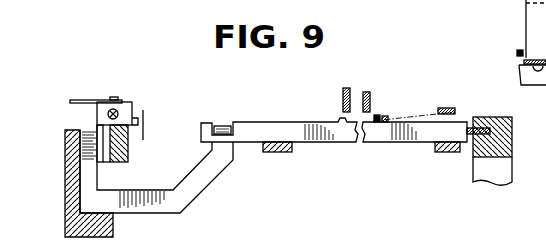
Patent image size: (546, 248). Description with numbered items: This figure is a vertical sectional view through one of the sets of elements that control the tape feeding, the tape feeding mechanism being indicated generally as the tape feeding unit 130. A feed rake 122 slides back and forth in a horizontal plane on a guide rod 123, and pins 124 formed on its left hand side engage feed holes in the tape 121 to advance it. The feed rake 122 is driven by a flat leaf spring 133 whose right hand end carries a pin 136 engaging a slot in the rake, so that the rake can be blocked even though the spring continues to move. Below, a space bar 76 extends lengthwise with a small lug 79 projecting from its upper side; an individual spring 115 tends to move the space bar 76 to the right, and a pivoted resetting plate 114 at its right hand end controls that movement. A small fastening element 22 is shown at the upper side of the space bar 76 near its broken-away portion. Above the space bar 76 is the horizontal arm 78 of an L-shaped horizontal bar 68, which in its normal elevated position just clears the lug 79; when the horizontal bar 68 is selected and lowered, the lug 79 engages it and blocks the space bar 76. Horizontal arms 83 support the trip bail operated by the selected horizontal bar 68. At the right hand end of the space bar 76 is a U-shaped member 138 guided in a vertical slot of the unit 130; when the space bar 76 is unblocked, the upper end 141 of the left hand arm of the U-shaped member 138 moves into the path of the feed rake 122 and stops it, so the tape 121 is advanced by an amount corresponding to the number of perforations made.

The tape feeding mechanism 130 is at (63, 170).
The U-shaped member 138 is at (145, 195).
The upper end of left hand arm of U-shaped member 141 is at (88, 140).
The feed rake 122 is at (131, 106).
The guide rod 123 is at (111, 109).
The flat leaf spring 133 is at (79, 100).
The pin 136 is at (117, 99).
The tape 121 is at (143, 117).
The pins 124 is at (132, 125).
The lugs 79 is at (338, 120).
The space bars 76 is at (428, 136).
The horizontal bar 68 is at (347, 88).
The horizontal arm 78 is at (367, 103).
The fastener 22 is at (372, 117).
The springs 115 is at (440, 109).
The resetting plate 114 is at (503, 168).
The horizontal arms 83 is at (539, 80).